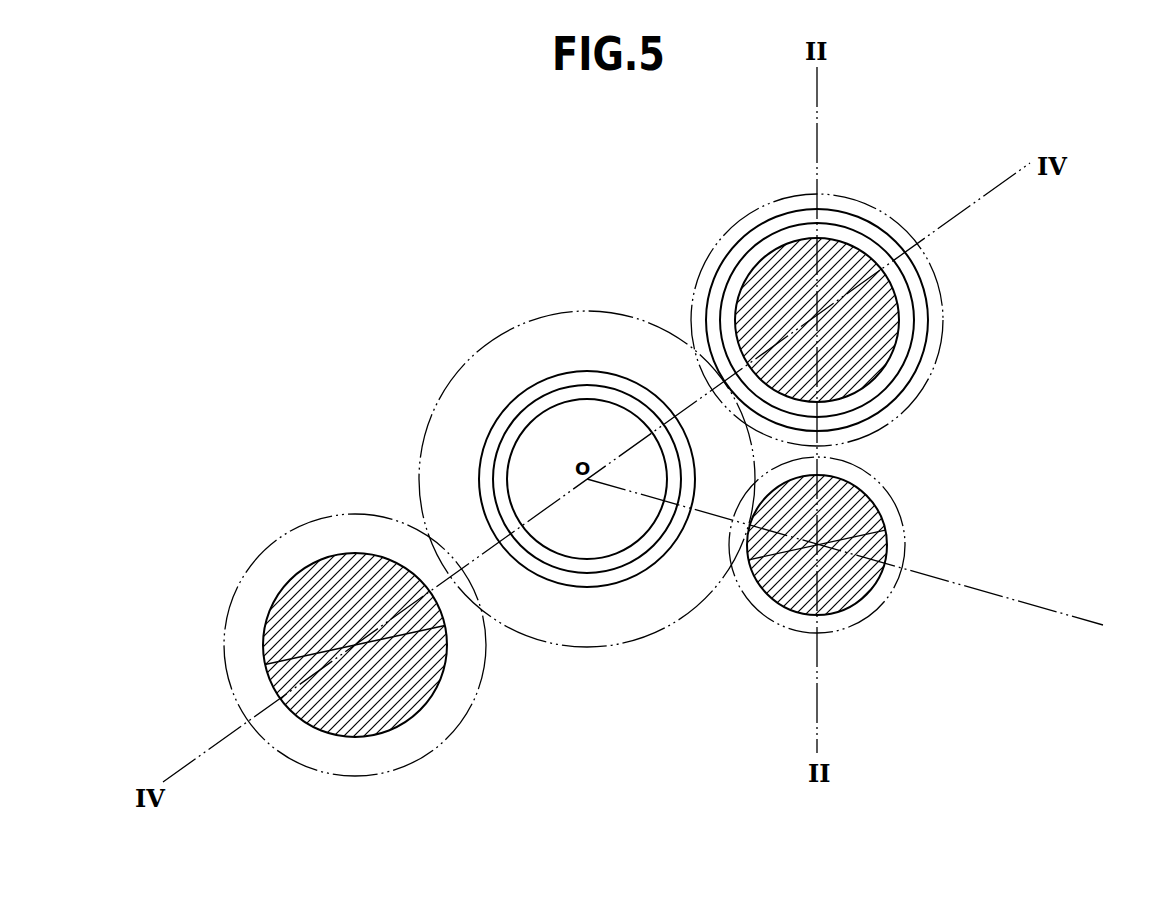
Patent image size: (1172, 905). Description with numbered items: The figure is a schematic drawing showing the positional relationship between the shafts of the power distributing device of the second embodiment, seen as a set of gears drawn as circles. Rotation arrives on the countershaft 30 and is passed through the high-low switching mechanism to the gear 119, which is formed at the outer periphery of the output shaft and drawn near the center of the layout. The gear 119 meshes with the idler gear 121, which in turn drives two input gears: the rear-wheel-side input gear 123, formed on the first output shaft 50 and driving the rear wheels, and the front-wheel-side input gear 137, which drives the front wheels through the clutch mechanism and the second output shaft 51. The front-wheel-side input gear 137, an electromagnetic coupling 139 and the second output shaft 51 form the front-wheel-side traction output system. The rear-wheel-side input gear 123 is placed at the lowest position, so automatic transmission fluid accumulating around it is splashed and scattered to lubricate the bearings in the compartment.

The countershaft 30 is at (910, 500).
The first output shaft 50 is at (311, 503).
The second output shaft 51 is at (965, 331).
The gear 119 is at (885, 609).
The idler gear 121 is at (645, 642).
The rear-wheel-side input gear 123 is at (472, 708).
The front-wheel-side input gear 137 is at (882, 213).
The electromagnetic coupling 139 is at (803, 175).